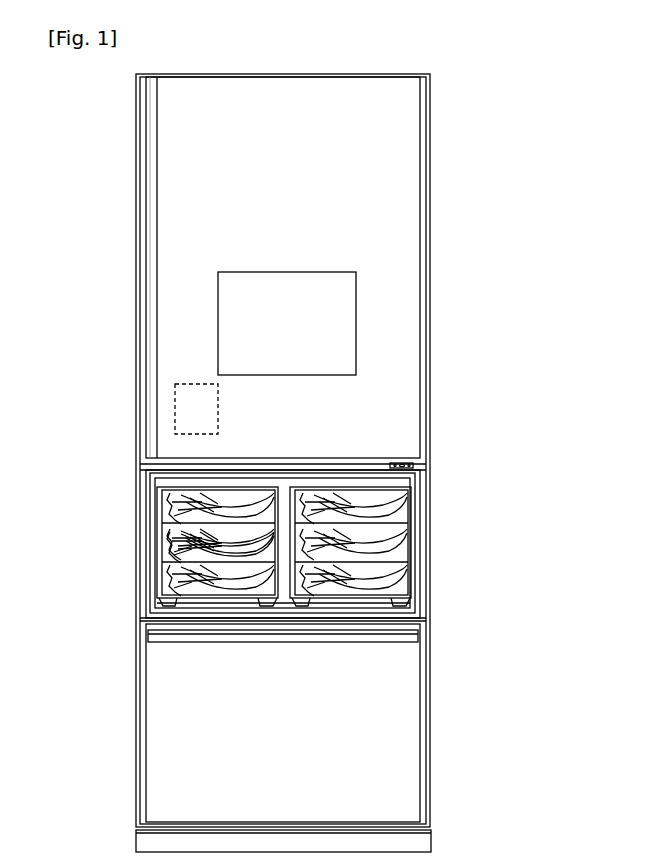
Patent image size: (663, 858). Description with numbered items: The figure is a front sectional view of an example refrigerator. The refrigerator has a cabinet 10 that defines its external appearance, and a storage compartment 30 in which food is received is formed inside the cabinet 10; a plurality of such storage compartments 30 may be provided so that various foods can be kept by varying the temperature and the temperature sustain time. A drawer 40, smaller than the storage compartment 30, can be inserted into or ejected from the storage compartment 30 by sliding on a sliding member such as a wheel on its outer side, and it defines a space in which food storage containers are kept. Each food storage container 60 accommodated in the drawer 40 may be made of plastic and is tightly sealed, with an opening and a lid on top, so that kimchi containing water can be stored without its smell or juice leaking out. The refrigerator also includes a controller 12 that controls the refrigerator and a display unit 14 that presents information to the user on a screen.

The cabinet 10 is at (430, 118).
The controller 12 is at (175, 400).
The display unit 14 is at (356, 302).
The storage compartment 30 is at (400, 481).
The drawer 40 is at (152, 523).
The food storage container 60 is at (160, 552).